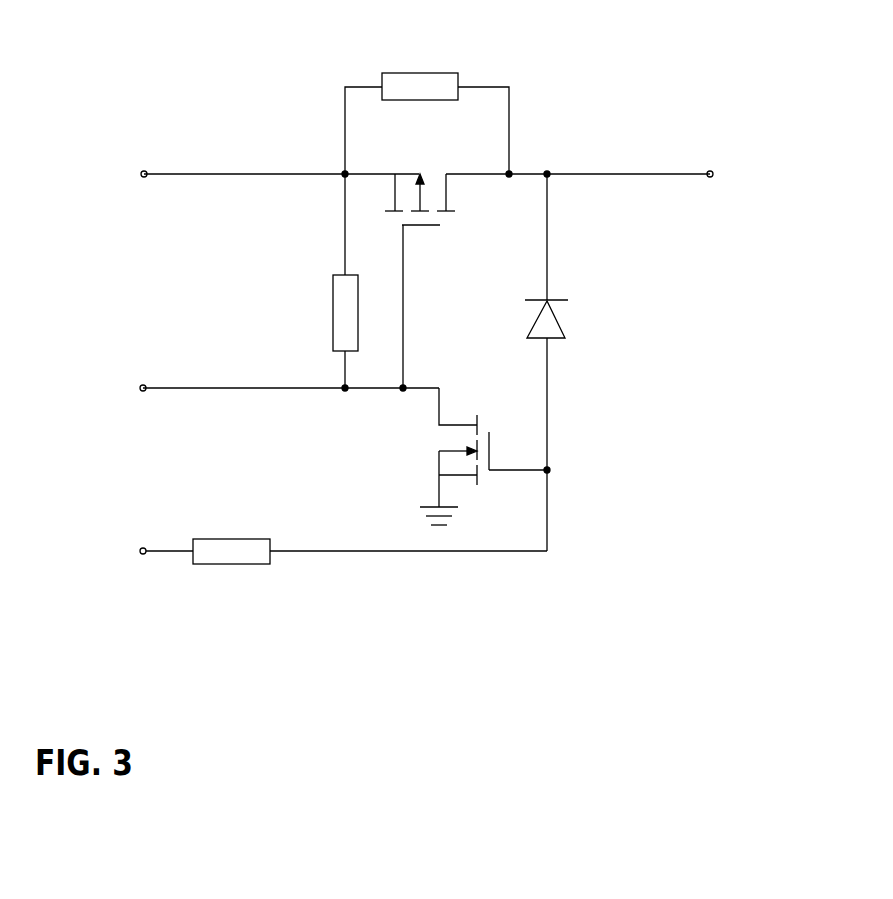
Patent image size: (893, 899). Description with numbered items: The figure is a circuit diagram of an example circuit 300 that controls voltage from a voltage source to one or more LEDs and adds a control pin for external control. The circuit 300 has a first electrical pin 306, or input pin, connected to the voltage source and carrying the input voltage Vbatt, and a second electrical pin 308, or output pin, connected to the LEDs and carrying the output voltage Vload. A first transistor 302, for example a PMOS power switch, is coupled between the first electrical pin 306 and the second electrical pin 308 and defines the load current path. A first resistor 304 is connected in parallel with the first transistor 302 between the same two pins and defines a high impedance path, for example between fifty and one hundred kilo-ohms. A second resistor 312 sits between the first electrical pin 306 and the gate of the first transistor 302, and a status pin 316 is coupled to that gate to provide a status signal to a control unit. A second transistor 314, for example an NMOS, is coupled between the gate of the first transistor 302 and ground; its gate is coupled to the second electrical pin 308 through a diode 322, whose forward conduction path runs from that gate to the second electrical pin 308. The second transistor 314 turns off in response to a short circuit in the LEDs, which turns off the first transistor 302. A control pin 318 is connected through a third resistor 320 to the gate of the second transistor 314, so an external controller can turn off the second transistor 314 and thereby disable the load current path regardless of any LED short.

The circuit 300 is at (643, 68).
The first transistor 302 is at (440, 226).
The first resistor 304 is at (448, 73).
The first electrical pin 306 is at (141, 176).
The second electrical pin 308 is at (713, 176).
The second resistor 312 is at (331, 330).
The second transistor 314 is at (489, 450).
The status pin 316 is at (140, 390).
The control pin 318 is at (140, 553).
The third resistor 320 is at (257, 565).
The diode 322 is at (561, 326).